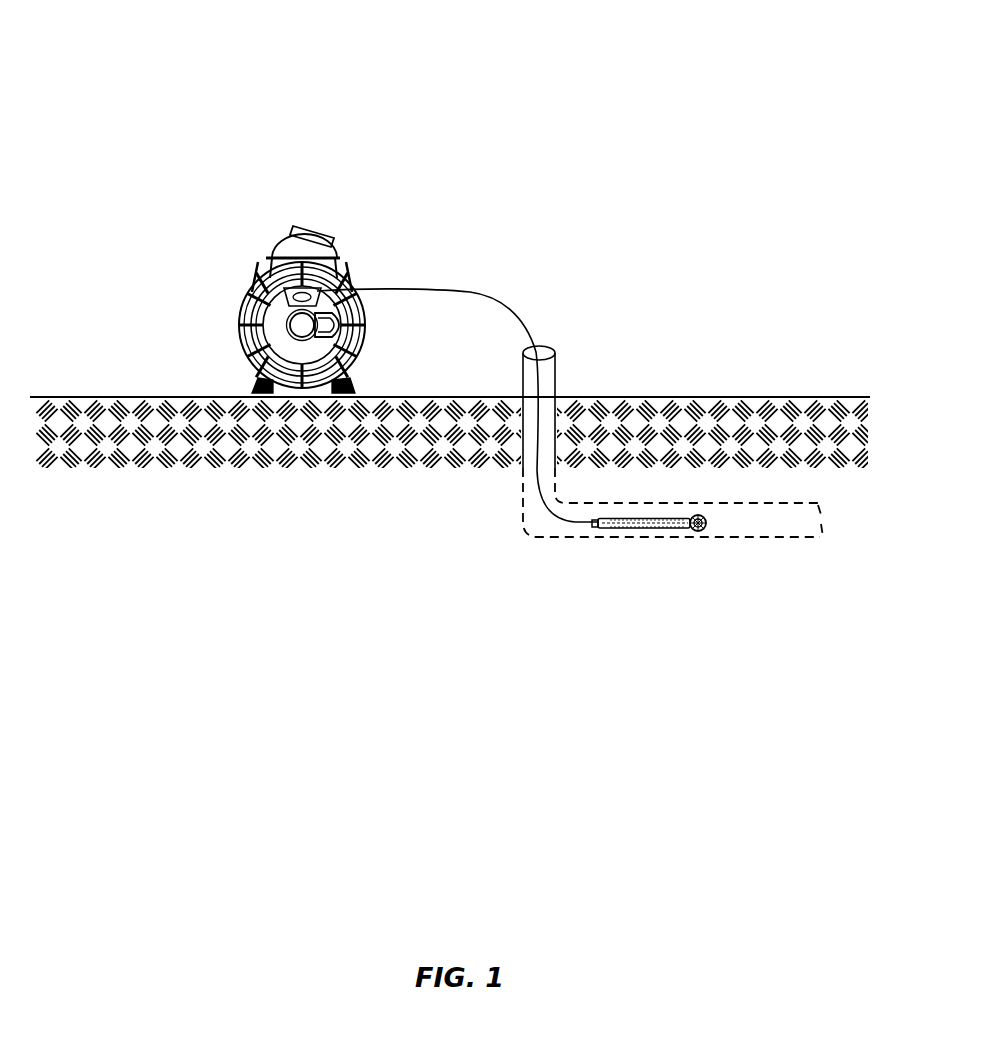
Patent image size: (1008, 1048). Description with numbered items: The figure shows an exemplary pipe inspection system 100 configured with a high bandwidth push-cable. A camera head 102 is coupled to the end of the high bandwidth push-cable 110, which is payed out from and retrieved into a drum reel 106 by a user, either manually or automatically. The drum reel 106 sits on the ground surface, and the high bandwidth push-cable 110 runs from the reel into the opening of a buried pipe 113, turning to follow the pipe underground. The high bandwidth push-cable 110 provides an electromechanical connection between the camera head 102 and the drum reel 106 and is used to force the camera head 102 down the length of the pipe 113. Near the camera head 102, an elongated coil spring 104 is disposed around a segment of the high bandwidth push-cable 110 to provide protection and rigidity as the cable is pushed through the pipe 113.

The pipe inspection system 100 is at (258, 82).
The camera head 102 is at (706, 526).
The elongated coil spring 104 is at (628, 528).
The drum reel 106 is at (250, 300).
The high bandwidth push-cable 110 is at (423, 290).
The pipe 113 is at (527, 527).